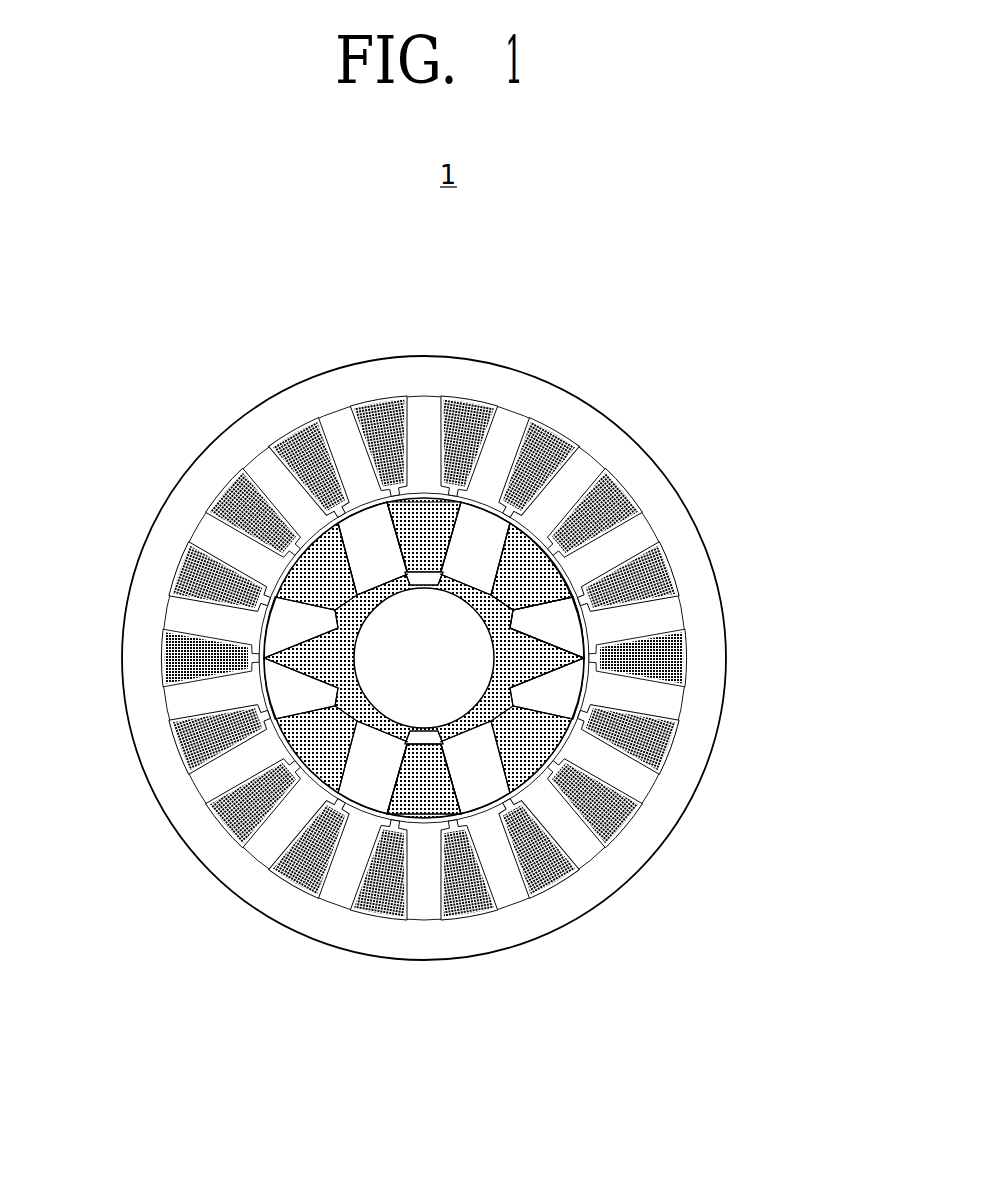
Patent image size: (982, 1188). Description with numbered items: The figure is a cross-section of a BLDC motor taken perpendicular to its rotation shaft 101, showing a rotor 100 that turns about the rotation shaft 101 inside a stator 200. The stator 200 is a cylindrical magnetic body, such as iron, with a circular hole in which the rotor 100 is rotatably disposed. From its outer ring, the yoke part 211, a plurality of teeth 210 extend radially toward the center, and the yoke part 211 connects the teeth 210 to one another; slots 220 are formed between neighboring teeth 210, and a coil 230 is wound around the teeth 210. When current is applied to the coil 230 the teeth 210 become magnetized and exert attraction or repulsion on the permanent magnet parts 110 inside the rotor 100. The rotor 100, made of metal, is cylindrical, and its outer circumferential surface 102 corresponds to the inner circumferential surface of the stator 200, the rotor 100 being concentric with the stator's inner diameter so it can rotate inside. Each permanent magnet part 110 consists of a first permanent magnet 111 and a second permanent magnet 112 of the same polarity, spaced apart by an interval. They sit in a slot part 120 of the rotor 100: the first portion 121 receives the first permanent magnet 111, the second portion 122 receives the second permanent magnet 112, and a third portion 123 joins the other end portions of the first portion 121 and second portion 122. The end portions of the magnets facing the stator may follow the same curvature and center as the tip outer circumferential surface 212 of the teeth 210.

The rotor 100 is at (549, 626).
The rotation shaft 101 is at (424, 658).
The outer circumferential surface 102 is at (424, 818).
The permanent magnet part 110 is at (424, 530).
The first permanent magnet 111 is at (398, 528).
The second permanent magnet 112 is at (482, 505).
The slot part 120 is at (556, 608).
The first portion 121 is at (563, 548).
The second portion 122 is at (602, 622).
The third portion 123 is at (548, 596).
The stator 200 is at (401, 636).
The teeth 210 is at (424, 636).
The yoke part 211 is at (272, 412).
The tip outer circumferential surface 212 is at (345, 465).
The slots 220 is at (196, 530).
The coil 230 is at (245, 508).